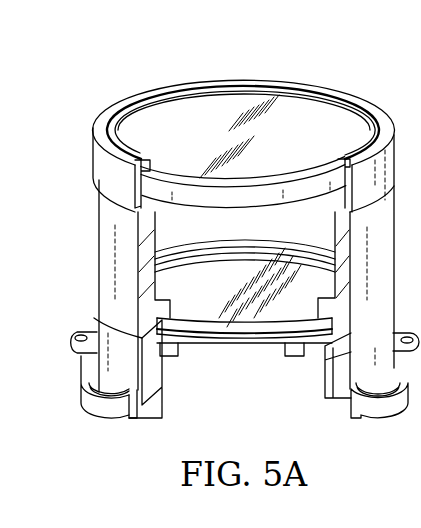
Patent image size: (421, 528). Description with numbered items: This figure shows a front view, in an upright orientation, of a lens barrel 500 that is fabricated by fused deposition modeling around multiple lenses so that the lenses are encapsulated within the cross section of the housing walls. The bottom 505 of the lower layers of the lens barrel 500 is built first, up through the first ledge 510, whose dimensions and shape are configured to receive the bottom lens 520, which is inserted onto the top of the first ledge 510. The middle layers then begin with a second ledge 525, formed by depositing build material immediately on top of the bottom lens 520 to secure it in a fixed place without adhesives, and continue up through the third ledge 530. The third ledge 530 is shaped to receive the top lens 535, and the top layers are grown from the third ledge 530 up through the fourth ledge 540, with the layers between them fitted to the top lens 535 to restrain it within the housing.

The lens barrel 500 is at (141, 72).
The bottom 505 is at (110, 420).
The first ledge 510 is at (303, 347).
The bottom lens 520 is at (233, 346).
The second ledge 525 is at (175, 312).
The third ledge 530 is at (390, 213).
The top lens 535 is at (311, 118).
The fourth ledge 540 is at (93, 167).